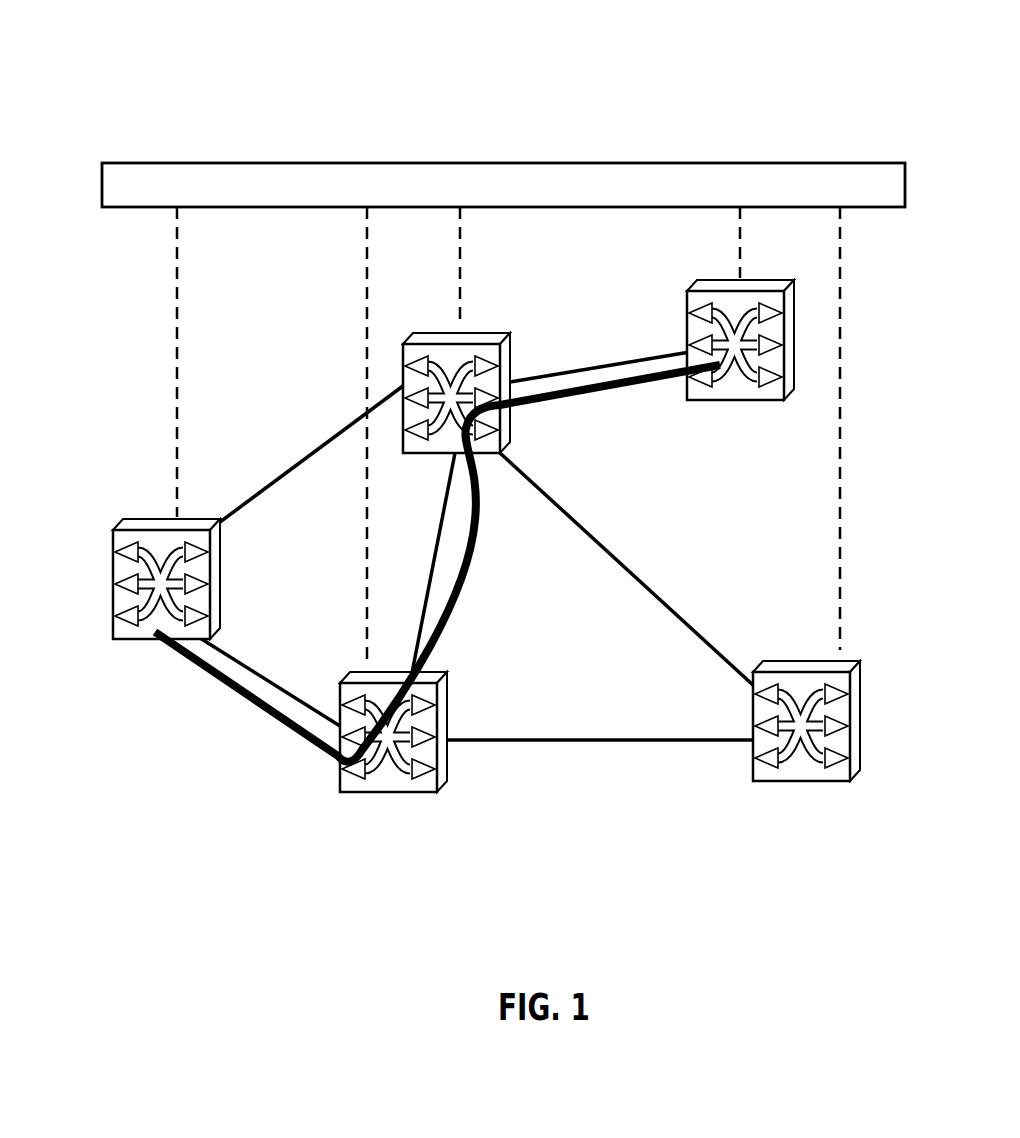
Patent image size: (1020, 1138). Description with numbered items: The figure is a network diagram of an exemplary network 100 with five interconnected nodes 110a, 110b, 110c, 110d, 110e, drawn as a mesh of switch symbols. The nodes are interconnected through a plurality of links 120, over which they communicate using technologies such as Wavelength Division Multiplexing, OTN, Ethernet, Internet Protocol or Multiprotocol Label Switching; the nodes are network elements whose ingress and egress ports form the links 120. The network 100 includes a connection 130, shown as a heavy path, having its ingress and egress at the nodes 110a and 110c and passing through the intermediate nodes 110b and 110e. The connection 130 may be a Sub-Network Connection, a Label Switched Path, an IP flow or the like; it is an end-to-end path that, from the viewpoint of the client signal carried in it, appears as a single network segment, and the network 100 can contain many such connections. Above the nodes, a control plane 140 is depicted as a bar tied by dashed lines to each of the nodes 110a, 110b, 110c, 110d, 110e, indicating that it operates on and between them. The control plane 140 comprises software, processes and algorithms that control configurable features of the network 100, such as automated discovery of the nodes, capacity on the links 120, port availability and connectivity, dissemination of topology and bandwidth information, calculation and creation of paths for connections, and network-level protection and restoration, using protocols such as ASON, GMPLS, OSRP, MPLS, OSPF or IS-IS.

The network 100 is at (529, 60).
The node 110a is at (112, 577).
The node 110b is at (490, 333).
The node 110c is at (753, 400).
The node 110d is at (808, 781).
The node 110e is at (340, 776).
The links 120 is at (297, 473).
The connection 130 is at (473, 582).
The control plane 140 is at (653, 163).